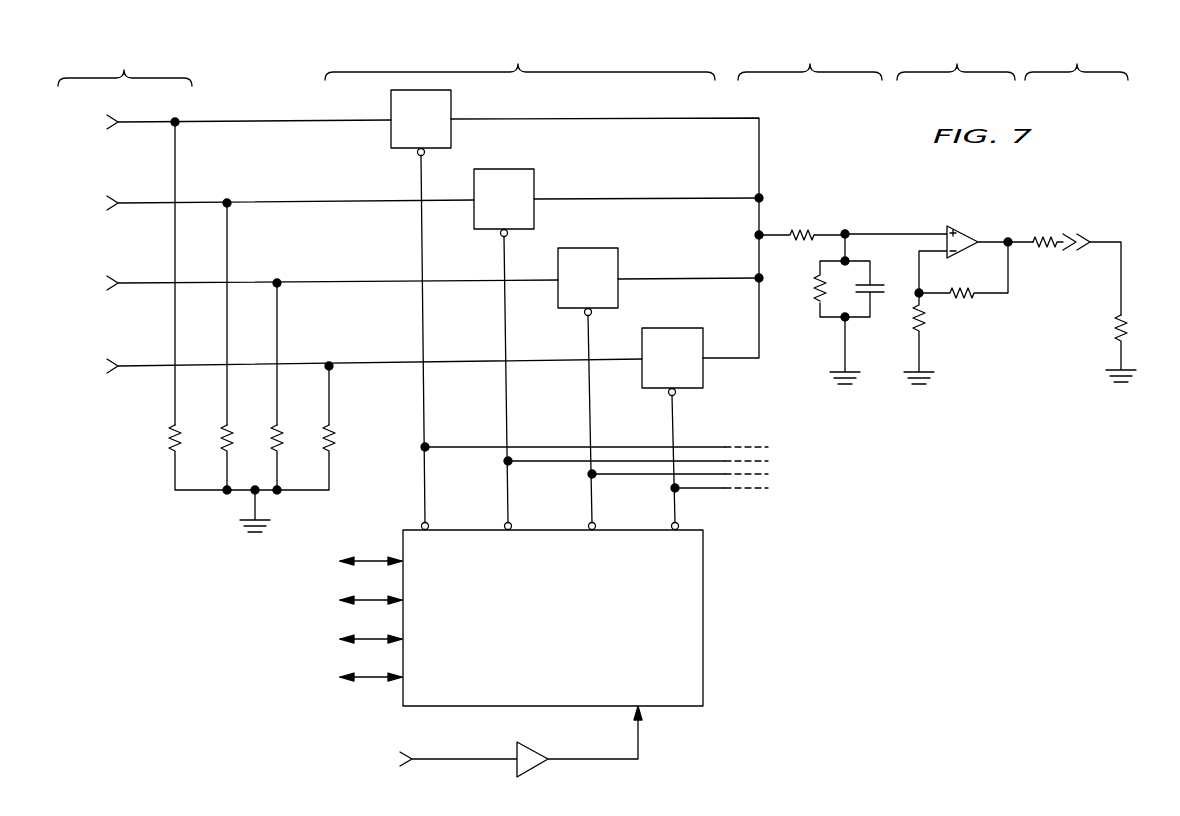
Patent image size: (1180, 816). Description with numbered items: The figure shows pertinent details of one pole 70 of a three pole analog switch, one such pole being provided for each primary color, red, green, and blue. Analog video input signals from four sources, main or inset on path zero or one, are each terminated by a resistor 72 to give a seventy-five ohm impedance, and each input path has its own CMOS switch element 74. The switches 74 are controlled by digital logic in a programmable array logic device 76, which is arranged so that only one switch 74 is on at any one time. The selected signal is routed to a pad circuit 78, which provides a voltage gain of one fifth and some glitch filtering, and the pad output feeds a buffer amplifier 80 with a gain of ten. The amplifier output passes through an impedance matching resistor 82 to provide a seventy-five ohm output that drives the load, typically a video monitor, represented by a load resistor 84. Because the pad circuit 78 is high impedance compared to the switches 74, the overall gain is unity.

The pole 70 is at (36, 203).
The resistor 72 is at (170, 441).
The CMOS switch element 74 is at (451, 101).
The programmable array logic (PAL) device 76 is at (703, 538).
The pad circuit 78 is at (846, 214).
The buffer amplifier 80 is at (957, 226).
The impedance matching resistor 82 is at (1041, 230).
The load resistor 84 is at (1126, 324).